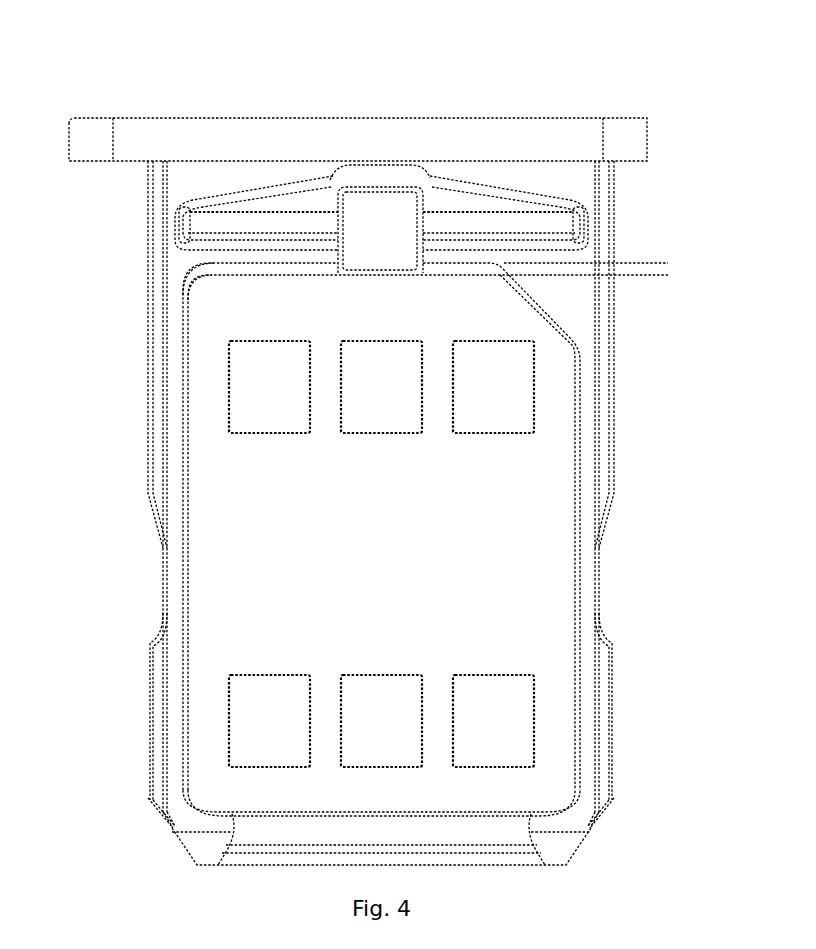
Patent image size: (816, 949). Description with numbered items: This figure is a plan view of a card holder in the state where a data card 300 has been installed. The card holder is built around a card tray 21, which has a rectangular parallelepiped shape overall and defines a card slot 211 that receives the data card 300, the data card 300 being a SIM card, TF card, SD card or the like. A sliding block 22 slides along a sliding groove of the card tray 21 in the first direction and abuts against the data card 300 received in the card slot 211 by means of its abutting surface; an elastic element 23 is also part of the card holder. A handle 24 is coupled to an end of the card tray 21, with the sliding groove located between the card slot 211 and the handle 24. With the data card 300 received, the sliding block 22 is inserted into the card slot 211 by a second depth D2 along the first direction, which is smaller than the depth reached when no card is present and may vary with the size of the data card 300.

The card tray 21 is at (173, 537).
The card slot 211 is at (188, 265).
The sliding block 22 is at (383, 225).
The elastic element 23 is at (573, 234).
The handle 24 is at (215, 135).
The data card 300 is at (510, 553).
The second depth D2 is at (665, 237).